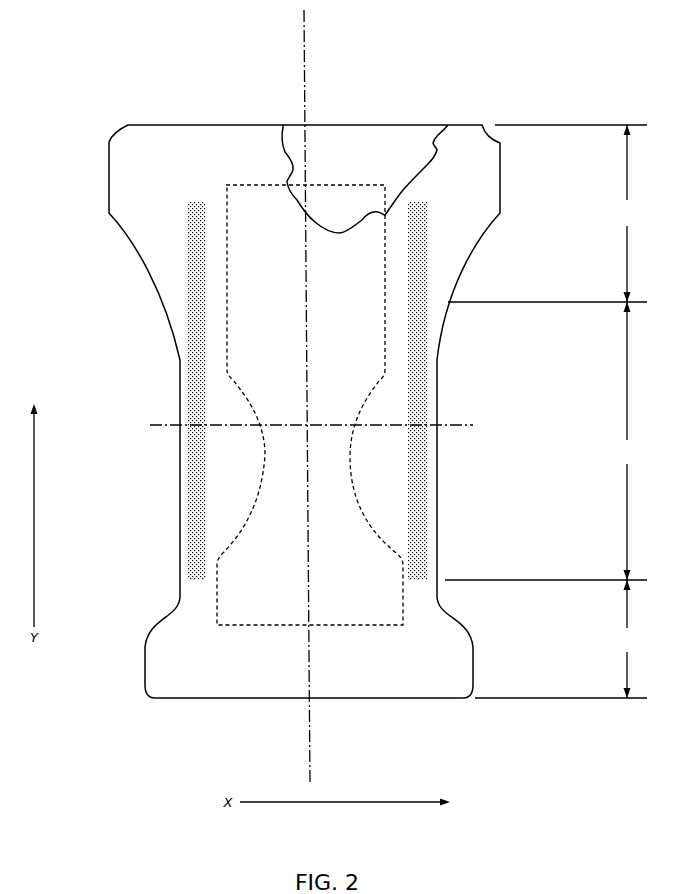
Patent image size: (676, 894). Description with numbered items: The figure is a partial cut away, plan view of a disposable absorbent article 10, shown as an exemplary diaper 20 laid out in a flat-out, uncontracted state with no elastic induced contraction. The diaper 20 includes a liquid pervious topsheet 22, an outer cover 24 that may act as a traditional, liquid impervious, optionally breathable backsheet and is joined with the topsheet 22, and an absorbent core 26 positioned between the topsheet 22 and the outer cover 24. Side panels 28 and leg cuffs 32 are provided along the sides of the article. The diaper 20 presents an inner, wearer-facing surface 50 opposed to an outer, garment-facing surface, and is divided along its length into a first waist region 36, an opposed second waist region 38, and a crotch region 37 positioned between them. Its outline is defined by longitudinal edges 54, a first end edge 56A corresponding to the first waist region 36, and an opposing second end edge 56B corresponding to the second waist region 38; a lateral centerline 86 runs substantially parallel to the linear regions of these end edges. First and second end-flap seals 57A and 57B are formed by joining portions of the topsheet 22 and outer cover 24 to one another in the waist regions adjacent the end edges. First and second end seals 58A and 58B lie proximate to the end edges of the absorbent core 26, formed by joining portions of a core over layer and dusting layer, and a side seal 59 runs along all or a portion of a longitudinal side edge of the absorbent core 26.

The absorbent article 10 is at (263, 368).
The diaper 20 is at (86, 351).
The topsheet 22 is at (227, 690).
The outer cover 24 is at (398, 158).
The absorbent core 26 is at (329, 212).
The side panels 28 is at (161, 262).
The leg cuffs 32 is at (180, 465).
The first waist region 36 is at (561, 639).
The crotch region 37 is at (546, 441).
The second waist region 38 is at (547, 213).
The inner, wearer-facing surface 50 is at (134, 385).
The longitudinal edges 54 is at (180, 360).
The first end edge 56A is at (333, 700).
The second end edge 56B is at (215, 125).
The first end-flap seal 57A is at (403, 688).
The second end-flap seal 57B is at (245, 142).
The first end seal 58A is at (229, 633).
The second end seal 58B is at (369, 176).
The side seal 59 is at (213, 216).
The lateral centerline 86 is at (452, 425).